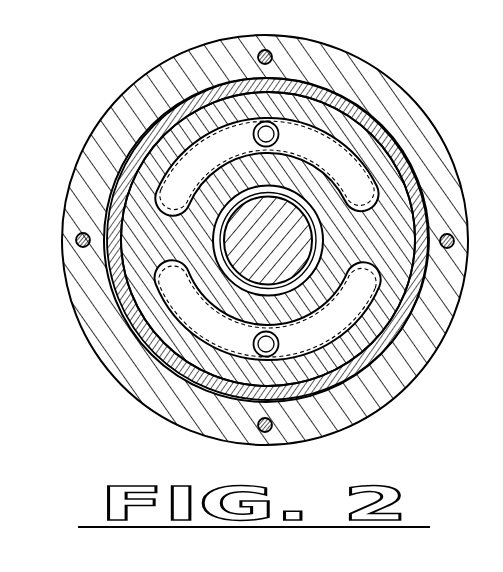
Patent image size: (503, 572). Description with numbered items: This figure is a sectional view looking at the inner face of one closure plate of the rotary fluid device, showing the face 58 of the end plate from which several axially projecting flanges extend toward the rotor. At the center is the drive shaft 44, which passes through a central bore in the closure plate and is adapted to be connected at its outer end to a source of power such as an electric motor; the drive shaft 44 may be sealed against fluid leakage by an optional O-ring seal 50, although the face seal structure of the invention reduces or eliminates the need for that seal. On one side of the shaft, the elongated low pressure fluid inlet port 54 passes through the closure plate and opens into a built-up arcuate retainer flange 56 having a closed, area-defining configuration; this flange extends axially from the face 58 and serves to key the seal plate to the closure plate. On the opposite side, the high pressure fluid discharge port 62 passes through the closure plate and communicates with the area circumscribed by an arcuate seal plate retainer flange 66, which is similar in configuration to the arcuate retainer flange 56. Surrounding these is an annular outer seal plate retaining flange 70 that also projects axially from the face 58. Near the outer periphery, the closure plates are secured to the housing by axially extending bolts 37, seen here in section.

The bolts 37 is at (271, 50).
The drive shaft 44 is at (286, 247).
The O-ring seal 50 is at (297, 202).
The low pressure fluid inlet port 54 is at (255, 344).
The arcuate retainer flange 56 is at (351, 331).
The face of the end plate 58 is at (384, 248).
The high pressure fluid discharge port 62 is at (259, 136).
The arcuate seal plate retainer flange 66 is at (324, 128).
The annular outer seal plate retaining flange 70 is at (176, 107).